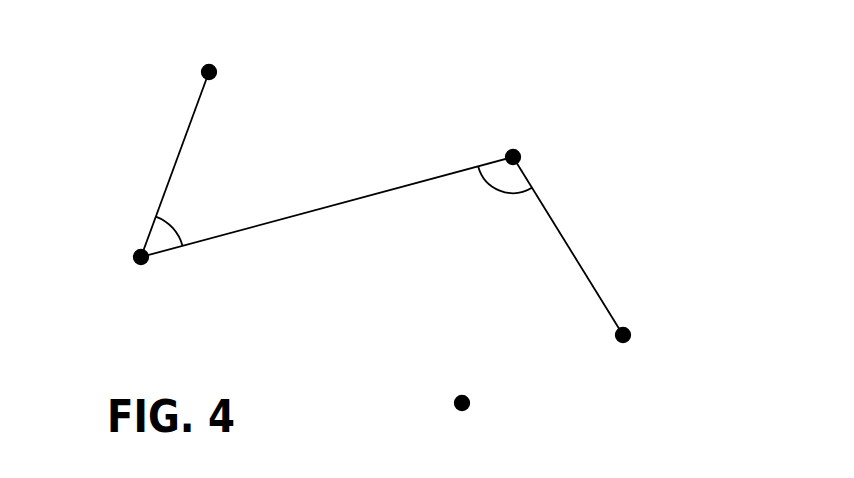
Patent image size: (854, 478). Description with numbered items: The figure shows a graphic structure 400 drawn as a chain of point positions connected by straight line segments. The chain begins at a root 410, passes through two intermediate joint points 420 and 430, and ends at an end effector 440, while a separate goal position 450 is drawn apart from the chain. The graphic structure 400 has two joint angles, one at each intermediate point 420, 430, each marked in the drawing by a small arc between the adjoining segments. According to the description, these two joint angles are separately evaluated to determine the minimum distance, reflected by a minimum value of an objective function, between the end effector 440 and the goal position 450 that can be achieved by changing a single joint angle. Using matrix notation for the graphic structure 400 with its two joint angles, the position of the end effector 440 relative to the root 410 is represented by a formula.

The graphic structure 400 is at (88, 106).
The root 410 is at (207, 56).
The position point 420 is at (115, 270).
The position point 430 is at (542, 145).
The end effector 440 is at (655, 346).
The goal position 450 is at (467, 422).